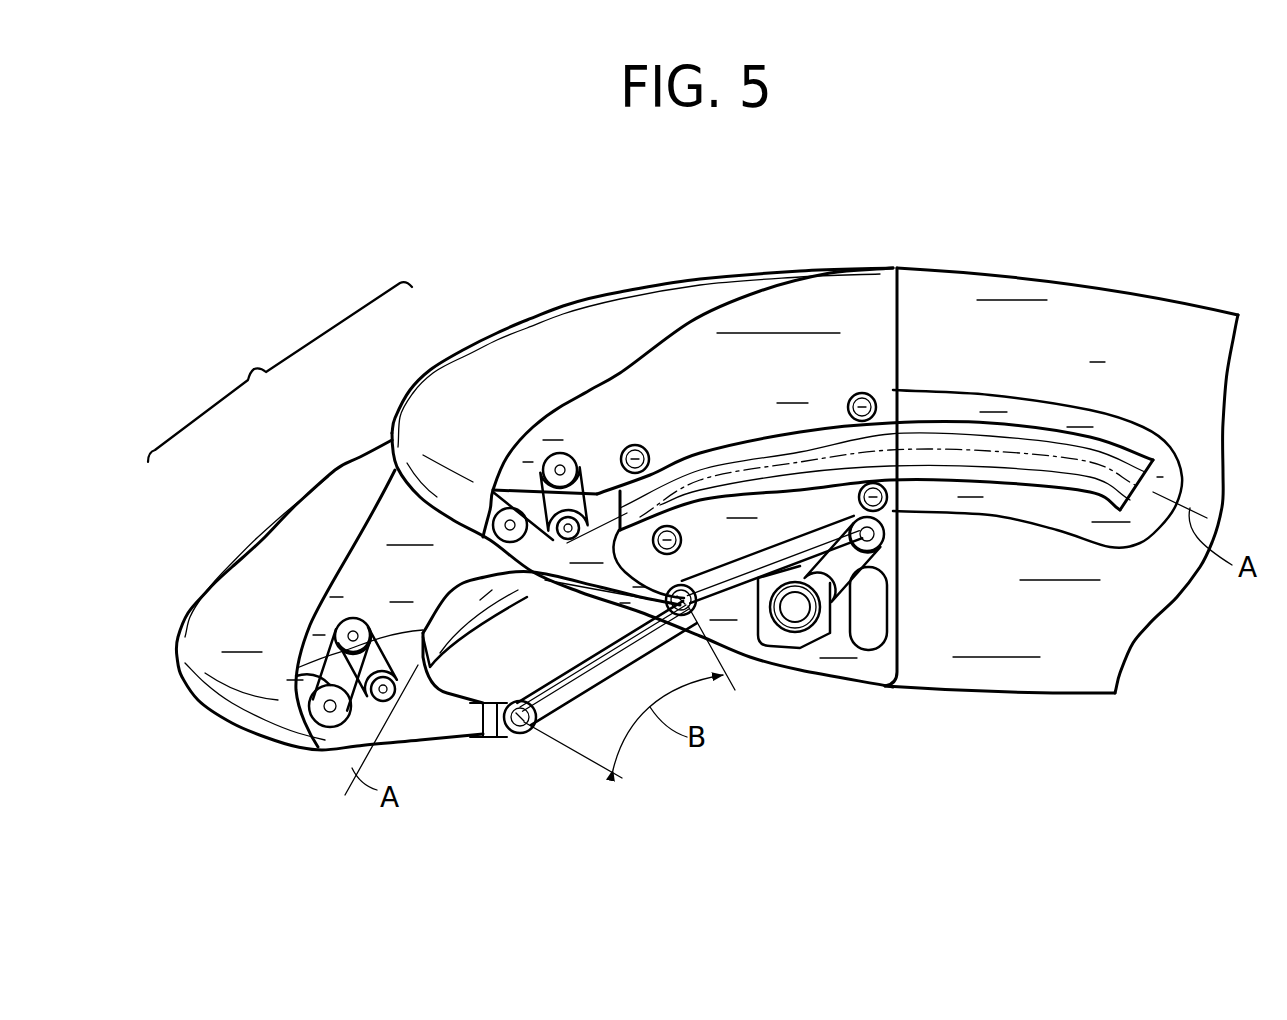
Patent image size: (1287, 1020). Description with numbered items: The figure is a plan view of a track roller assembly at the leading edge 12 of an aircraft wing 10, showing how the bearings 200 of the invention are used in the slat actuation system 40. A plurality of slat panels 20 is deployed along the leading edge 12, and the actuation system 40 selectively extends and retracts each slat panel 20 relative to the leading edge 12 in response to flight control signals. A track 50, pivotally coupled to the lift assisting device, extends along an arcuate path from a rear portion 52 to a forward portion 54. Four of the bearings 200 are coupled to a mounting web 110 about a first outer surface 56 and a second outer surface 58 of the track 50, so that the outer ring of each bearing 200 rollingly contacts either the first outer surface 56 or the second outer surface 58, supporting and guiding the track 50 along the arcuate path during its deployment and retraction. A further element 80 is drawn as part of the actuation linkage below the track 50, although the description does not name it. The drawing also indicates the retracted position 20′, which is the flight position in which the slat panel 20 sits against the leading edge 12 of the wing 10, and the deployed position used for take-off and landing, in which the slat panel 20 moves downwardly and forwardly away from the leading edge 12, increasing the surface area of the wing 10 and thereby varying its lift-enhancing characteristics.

The wing 10 is at (1013, 693).
The leading edge 12 is at (923, 267).
The slat panel 20 is at (280, 372).
The retracted position 20′ is at (479, 383).
The actuation system 40 is at (795, 320).
The track 50 is at (955, 418).
The rear portion 52 is at (1132, 470).
The forward portion 54 is at (596, 482).
The first outer surface 56 is at (749, 440).
The second outer surface 58 is at (848, 486).
The actuator rod 80 is at (541, 700).
The mounting web 110 is at (882, 380).
The bearing 200 is at (850, 397).